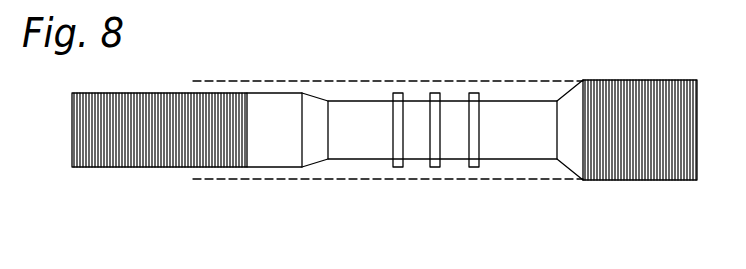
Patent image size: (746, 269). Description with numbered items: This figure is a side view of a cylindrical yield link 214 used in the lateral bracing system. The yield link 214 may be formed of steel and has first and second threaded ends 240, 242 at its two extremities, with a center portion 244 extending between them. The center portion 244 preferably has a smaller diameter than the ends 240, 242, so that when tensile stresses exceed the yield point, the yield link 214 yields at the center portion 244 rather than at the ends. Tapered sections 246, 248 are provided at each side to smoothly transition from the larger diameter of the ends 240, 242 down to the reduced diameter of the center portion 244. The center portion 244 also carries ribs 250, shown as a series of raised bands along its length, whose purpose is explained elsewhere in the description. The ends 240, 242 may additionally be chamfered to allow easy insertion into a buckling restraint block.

The cylindrical yield link 214 is at (550, 46).
The first threaded end 240 is at (155, 93).
The second threaded end 242 is at (668, 80).
The center portion 244 is at (378, 101).
The tapered section 246 is at (311, 167).
The tapered section 248 is at (572, 163).
The ribs 250 is at (474, 167).